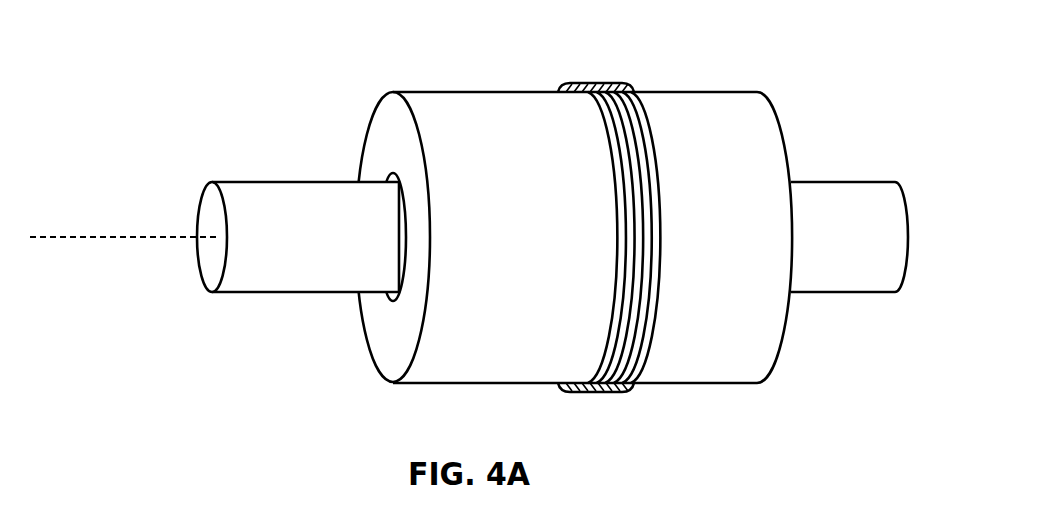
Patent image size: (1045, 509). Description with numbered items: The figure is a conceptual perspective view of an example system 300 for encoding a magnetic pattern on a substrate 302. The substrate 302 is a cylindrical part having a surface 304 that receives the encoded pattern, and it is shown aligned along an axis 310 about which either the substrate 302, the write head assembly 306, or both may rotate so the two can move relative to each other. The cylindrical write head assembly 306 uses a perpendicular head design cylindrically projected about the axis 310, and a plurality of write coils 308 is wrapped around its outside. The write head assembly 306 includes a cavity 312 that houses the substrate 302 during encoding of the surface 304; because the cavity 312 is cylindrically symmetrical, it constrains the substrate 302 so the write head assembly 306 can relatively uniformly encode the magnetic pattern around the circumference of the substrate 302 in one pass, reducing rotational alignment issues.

The system 300 is at (469, 204).
The substrate 302 is at (298, 218).
The surface 304 is at (222, 182).
The write head assembly 306 is at (540, 239).
The write coils 308 is at (618, 62).
The axis 310 is at (67, 237).
The cavity 312 is at (366, 168).